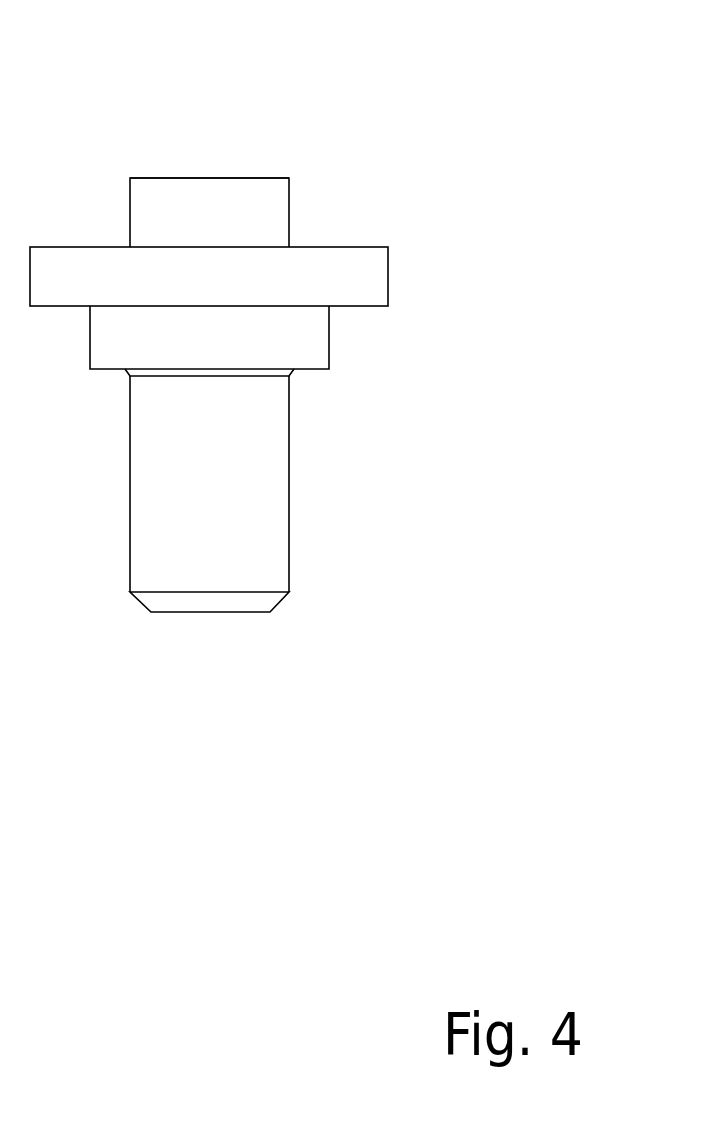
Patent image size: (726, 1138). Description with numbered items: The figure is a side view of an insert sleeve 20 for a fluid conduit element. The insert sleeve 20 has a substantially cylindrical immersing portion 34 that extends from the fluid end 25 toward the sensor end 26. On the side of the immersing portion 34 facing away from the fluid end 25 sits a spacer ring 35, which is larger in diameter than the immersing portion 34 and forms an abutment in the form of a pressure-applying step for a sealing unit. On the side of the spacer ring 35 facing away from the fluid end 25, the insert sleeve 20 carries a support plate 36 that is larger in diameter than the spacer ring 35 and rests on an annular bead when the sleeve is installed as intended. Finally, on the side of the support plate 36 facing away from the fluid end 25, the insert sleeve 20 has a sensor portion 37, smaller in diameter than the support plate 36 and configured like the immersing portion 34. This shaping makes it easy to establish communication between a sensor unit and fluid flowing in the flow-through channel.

The insert sleeve 20 is at (282, 150).
The fluid end 25 is at (200, 618).
The sensor end 26 is at (165, 174).
The immersing portion 34 is at (230, 432).
The spacer ring 35 is at (295, 337).
The support plate 36 is at (347, 272).
The sensor portion 37 is at (258, 215).